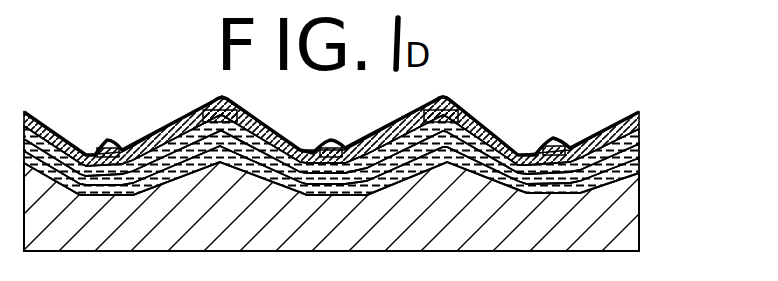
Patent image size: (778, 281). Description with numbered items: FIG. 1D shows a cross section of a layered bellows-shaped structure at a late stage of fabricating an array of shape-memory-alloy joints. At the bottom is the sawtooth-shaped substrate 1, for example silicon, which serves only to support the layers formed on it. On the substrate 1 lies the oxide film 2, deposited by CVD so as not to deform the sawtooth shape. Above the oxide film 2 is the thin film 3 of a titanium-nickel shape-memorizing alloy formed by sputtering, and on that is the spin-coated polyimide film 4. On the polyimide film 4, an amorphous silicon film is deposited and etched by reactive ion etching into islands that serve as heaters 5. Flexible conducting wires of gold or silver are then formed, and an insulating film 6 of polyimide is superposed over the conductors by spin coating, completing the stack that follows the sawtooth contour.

The substrate 1 is at (637, 217).
The oxide film 2 is at (640, 157).
The thin film of alloy 3 is at (640, 140).
The polyimide film 4 is at (623, 123).
The heaters 5 is at (560, 143).
The insulating film 6 is at (597, 134).